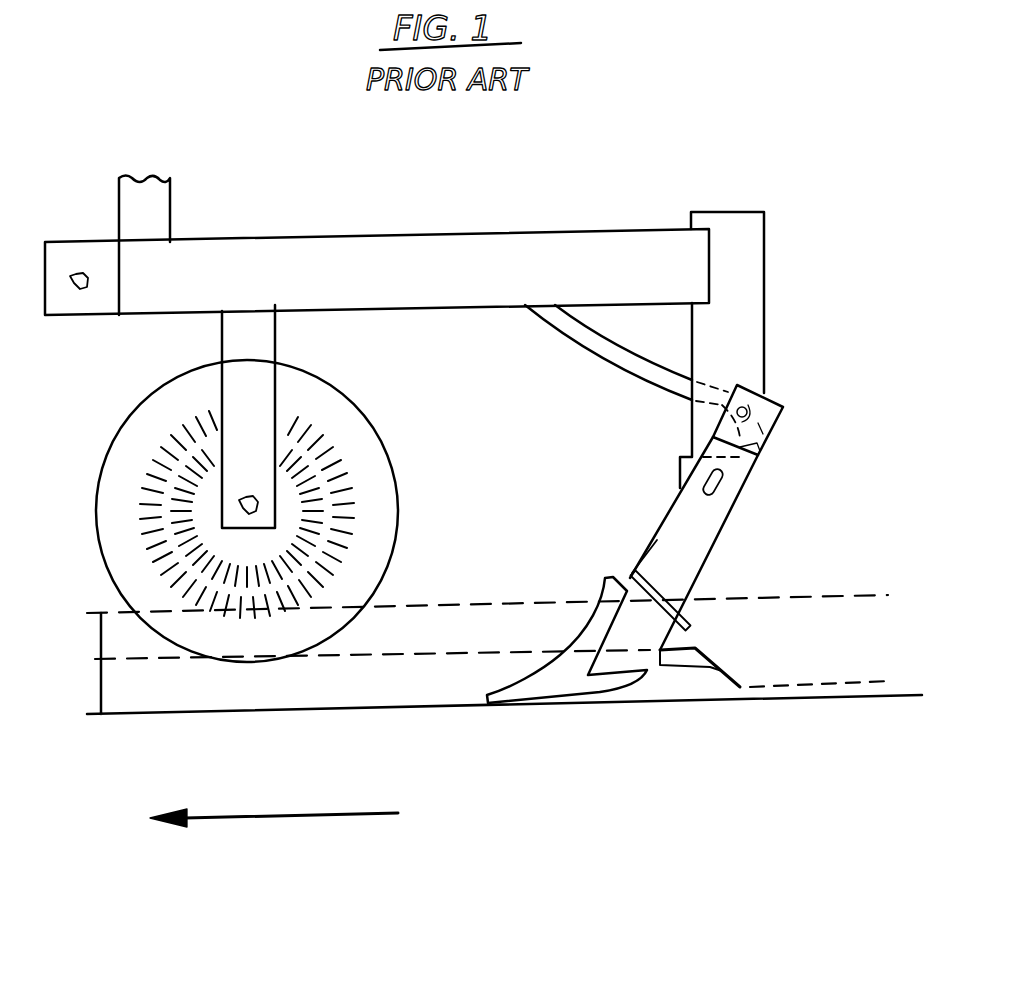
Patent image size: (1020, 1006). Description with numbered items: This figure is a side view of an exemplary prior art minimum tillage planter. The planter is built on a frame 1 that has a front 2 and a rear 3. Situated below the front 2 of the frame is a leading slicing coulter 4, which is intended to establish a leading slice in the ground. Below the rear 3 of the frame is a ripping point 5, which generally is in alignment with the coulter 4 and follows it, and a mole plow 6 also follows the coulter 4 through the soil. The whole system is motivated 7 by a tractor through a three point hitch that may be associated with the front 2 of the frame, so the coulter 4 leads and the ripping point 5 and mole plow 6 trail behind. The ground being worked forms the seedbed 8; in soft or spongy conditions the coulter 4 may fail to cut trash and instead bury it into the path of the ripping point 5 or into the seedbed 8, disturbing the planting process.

The frame 1 is at (395, 235).
The front of the frame 2 is at (119, 316).
The rear of the frame 3 is at (700, 237).
The leading slicing coulter 4 is at (113, 475).
The ripping point 5 is at (600, 694).
The mole plow 6 is at (718, 660).
The motivation direction 7 is at (318, 856).
The seedbed 8 is at (825, 615).